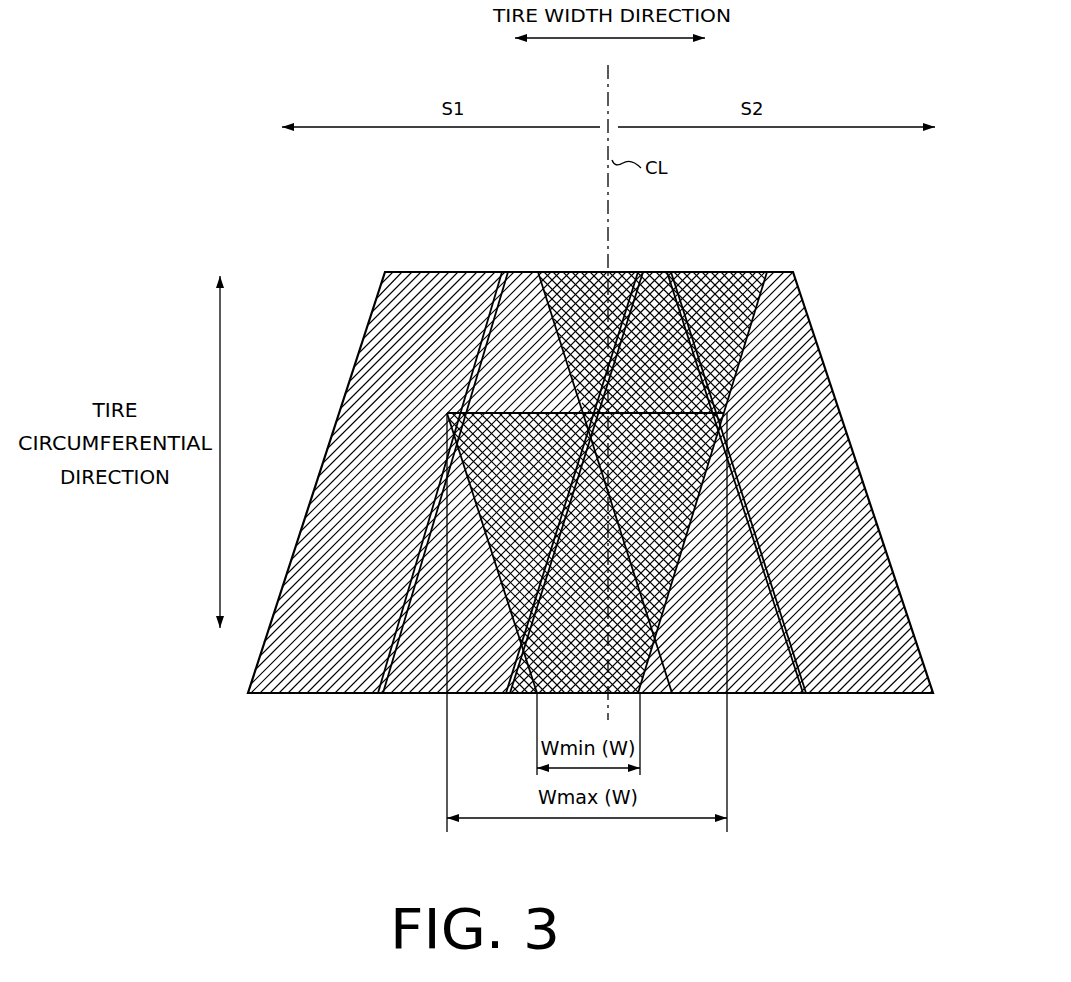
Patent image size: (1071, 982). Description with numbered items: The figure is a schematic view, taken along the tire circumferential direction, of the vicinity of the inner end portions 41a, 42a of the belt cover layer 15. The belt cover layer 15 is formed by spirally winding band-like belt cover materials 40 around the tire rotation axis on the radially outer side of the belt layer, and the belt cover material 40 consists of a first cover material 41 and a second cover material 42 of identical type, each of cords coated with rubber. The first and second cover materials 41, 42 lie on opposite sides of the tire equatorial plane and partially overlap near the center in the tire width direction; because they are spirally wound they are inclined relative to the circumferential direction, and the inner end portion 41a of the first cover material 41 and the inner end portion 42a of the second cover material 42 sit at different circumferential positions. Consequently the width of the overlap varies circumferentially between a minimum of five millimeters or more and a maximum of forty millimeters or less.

The belt cover layer 15 is at (361, 233).
The belt cover material 40 is at (593, 452).
The first cover material 41 is at (375, 357).
The second cover material 42 is at (815, 372).
The inner end portion of first cover material 41a is at (725, 272).
The inner end portion of second cover material 42a is at (523, 412).